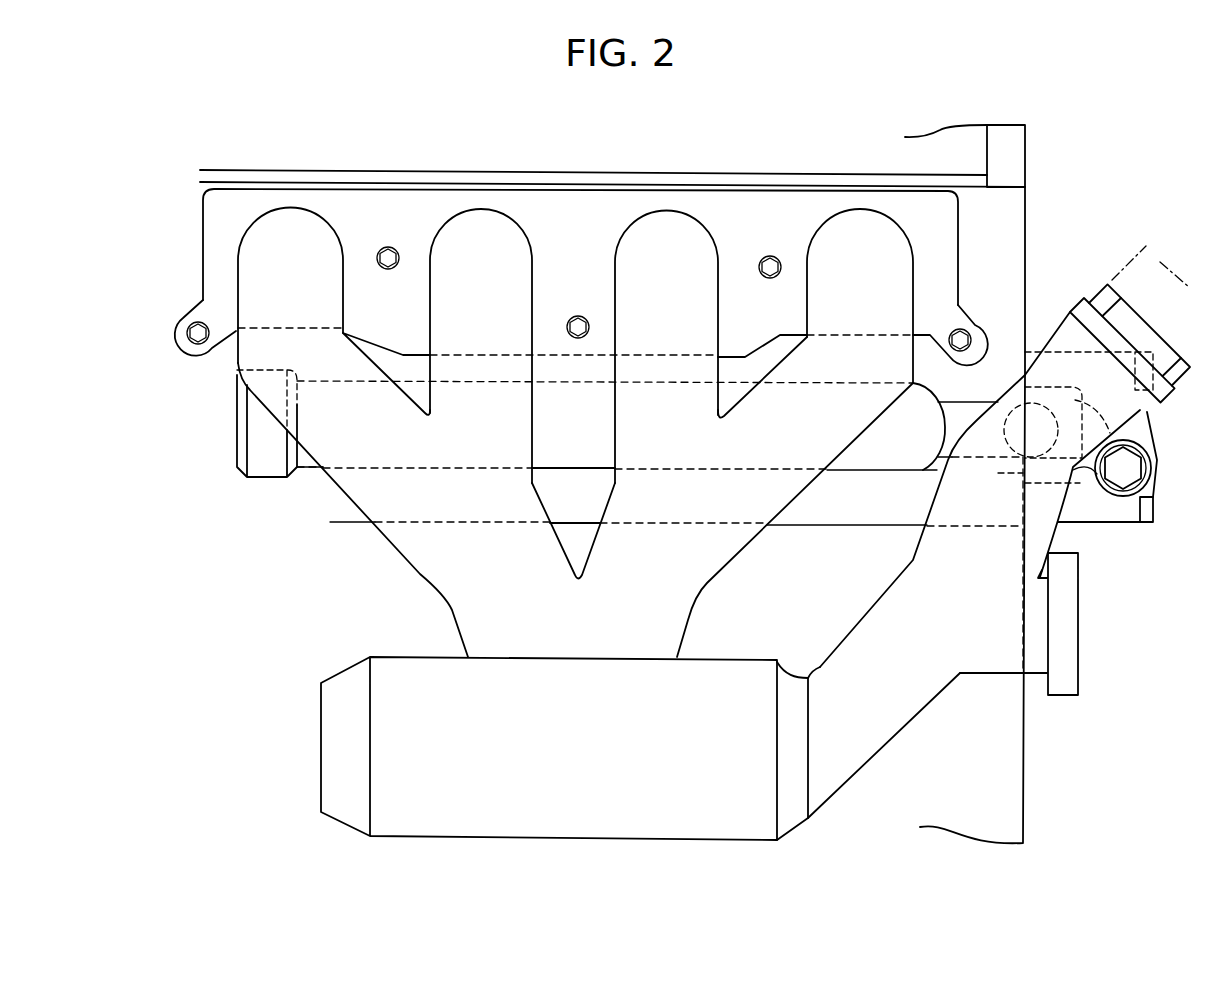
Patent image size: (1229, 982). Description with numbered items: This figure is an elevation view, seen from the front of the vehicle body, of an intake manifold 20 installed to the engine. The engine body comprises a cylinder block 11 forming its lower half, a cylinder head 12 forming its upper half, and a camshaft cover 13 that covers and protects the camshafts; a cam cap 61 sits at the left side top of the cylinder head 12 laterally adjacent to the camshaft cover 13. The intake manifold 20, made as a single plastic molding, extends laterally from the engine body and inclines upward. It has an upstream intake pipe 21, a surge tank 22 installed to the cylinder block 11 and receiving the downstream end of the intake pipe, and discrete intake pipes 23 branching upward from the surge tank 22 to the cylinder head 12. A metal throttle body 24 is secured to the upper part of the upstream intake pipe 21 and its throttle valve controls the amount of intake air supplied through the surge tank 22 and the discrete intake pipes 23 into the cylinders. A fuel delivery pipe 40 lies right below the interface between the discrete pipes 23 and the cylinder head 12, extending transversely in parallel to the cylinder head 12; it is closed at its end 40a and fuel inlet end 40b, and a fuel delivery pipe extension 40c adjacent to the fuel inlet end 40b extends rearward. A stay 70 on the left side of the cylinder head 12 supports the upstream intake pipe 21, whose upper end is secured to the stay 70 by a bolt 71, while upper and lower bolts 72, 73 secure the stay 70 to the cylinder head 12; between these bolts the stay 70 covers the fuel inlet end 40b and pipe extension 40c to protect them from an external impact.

The cylinder block 11 is at (1013, 788).
The cylinder head 12 is at (1030, 253).
The camshaft cover 13 is at (920, 148).
The intake manifold 20 is at (420, 578).
The upstream intake pipe 21 is at (863, 773).
The surge tank 22 is at (453, 840).
The discrete intake pipes 23 is at (337, 230).
The throttle body 24 is at (1143, 275).
The fuel delivery pipe 40 is at (584, 470).
The closed end 40a is at (232, 443).
The fuel inlet end 40b is at (957, 402).
The fuel delivery pipe extension 40c is at (1002, 462).
The cam cap 61 is at (1020, 157).
The stay 70 is at (1120, 520).
The bolt 71 is at (1140, 472).
The upper bolt 72 is at (1162, 405).
The lower bolt 73 is at (1153, 510).